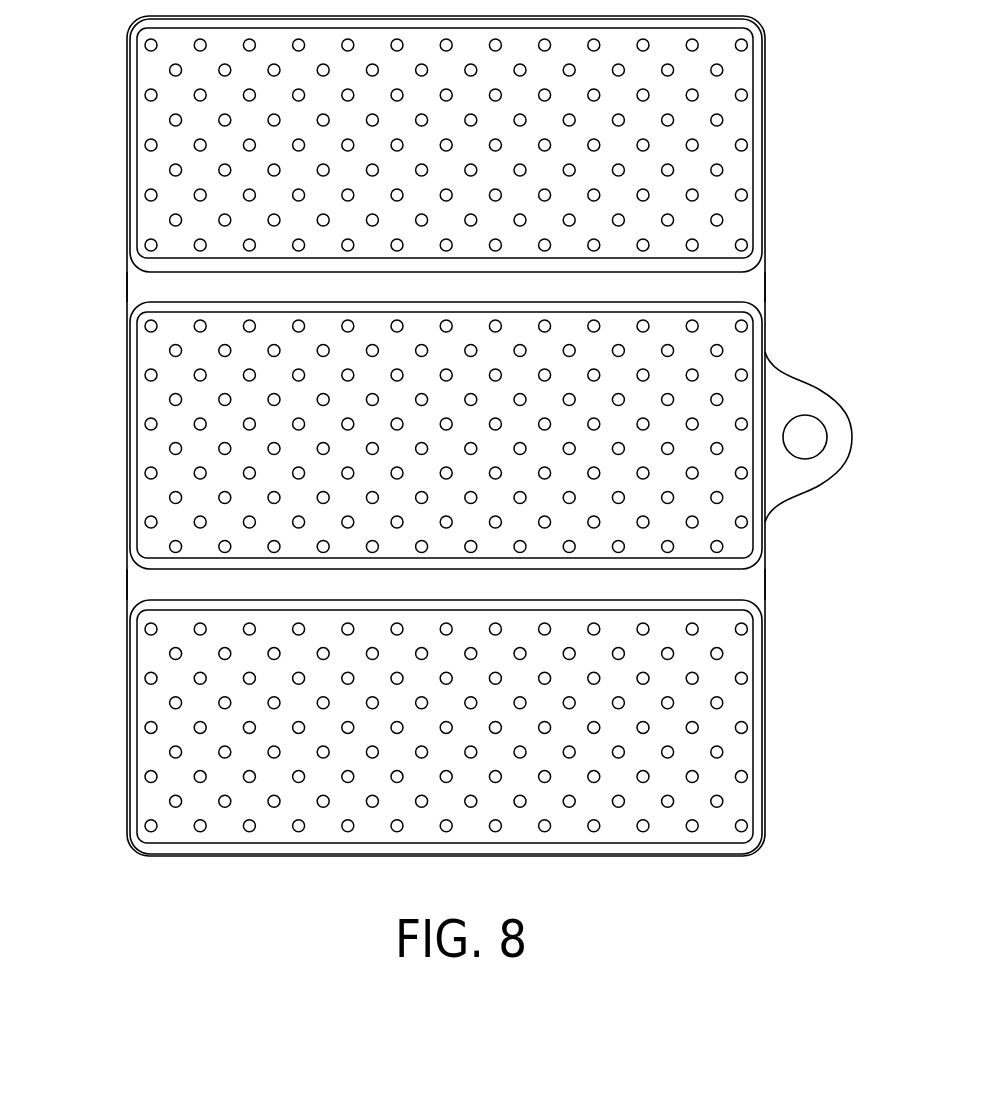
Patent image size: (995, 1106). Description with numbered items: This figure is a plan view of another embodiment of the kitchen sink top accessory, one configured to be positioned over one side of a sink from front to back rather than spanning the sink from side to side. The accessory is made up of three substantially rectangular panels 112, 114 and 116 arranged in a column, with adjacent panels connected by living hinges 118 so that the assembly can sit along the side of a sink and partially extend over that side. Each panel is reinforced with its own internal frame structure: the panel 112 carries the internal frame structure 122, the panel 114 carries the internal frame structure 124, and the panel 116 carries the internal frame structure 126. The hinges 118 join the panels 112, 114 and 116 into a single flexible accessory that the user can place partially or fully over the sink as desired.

The panel 112 is at (743, 173).
The panel 114 is at (743, 542).
The panel 116 is at (743, 802).
The living hinges 118 is at (747, 290).
The internal frame structure 122 is at (130, 223).
The internal frame structure 124 is at (130, 497).
The internal frame structure 126 is at (130, 753).